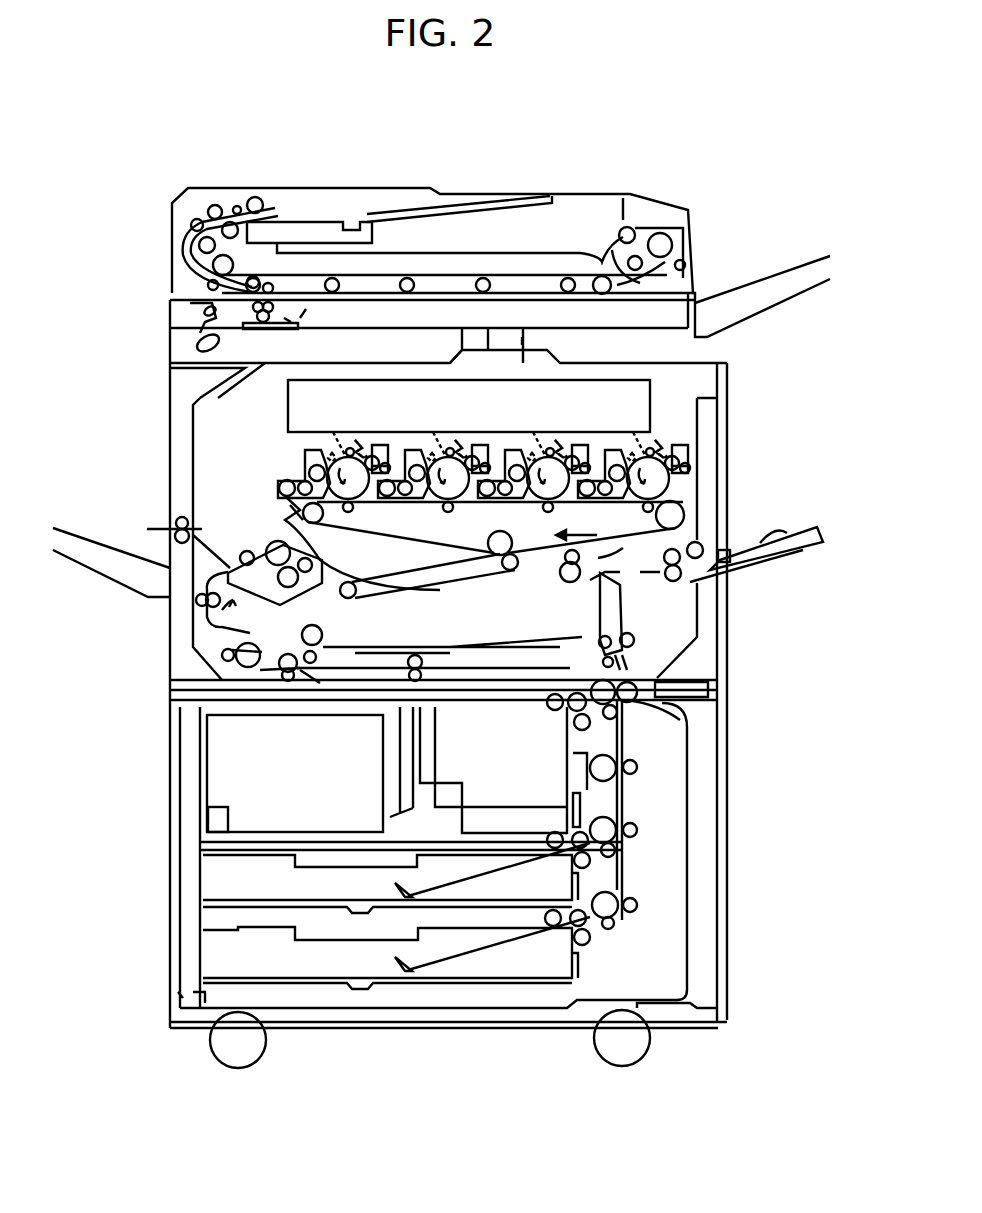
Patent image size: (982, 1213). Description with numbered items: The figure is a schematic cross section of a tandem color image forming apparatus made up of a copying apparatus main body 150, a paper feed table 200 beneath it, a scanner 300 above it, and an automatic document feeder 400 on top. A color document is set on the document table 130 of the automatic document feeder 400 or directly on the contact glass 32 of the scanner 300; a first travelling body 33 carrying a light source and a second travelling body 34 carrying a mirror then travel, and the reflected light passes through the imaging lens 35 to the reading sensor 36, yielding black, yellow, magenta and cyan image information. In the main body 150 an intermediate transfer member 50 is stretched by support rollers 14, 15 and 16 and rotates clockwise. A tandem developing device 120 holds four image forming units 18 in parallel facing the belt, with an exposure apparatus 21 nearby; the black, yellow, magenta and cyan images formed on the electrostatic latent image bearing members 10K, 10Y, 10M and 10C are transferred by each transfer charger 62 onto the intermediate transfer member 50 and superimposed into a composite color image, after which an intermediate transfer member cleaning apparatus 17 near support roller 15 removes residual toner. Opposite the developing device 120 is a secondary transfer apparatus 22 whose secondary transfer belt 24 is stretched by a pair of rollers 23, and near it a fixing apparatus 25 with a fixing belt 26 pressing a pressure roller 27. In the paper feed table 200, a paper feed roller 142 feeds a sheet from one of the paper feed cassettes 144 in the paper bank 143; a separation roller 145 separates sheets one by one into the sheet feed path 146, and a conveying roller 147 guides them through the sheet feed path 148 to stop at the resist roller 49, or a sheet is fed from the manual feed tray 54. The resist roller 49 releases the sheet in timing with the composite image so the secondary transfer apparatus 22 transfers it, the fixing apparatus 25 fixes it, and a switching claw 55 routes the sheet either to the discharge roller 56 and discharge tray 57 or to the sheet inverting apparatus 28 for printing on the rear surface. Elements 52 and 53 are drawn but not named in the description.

The automatic document feeder 400 is at (170, 212).
The document table 130 is at (405, 205).
The contact glass 32 is at (523, 293).
The scanner 300 is at (163, 323).
The second travelling body 34 is at (195, 333).
The first travelling body 33 is at (262, 330).
The imaging lens 35 is at (468, 335).
The reading sensor 36 is at (526, 341).
The copying apparatus main body 150 is at (163, 436).
The exposure apparatus 21 is at (652, 392).
The tandem developing device 120 is at (291, 463).
The yellow electrostatic latent image bearing member 10Y is at (333, 455).
The cyan electrostatic latent image bearing member 10C is at (433, 455).
The magenta electrostatic latent image bearing member 10M is at (533, 455).
The black electrostatic latent image bearing member 10K is at (633, 455).
The image forming unit 18 is at (361, 441).
The transfer charger 62 is at (353, 511).
The intermediate transfer member 50 is at (440, 548).
The support roller 15 is at (320, 522).
The support roller 14 is at (684, 515).
The support roller 16 is at (500, 556).
The roller 23 is at (355, 597).
The secondary transfer belt 24 is at (420, 590).
The intermediate transfer member cleaning apparatus 17 is at (279, 505).
The fixing belt 26 is at (285, 545).
The discharge roller 56 is at (179, 518).
The discharge tray 57 is at (112, 567).
The switching claw 55 is at (194, 603).
The fixing apparatus 25 is at (213, 627).
The pressure roller 27 is at (322, 597).
The secondary transfer apparatus 22 is at (531, 568).
The resist roller 49 is at (599, 582).
The sheet feed path 148 is at (634, 641).
The discharge roller pair 53 is at (630, 574).
The discharge port 52 is at (690, 594).
The manual feed tray 54 is at (762, 562).
The paper feed table 200 is at (166, 780).
The sheet inverting apparatus 28 is at (447, 690).
The paper feed cassette 144 is at (265, 835).
The paper bank 143 is at (228, 907).
The paper feed roller 142 is at (553, 711).
The separation roller 145 is at (575, 730).
The conveying roller 147 is at (630, 696).
The sheet feed path 146 is at (624, 800).